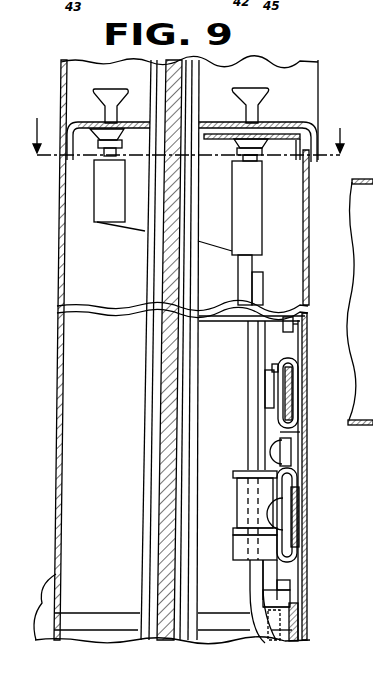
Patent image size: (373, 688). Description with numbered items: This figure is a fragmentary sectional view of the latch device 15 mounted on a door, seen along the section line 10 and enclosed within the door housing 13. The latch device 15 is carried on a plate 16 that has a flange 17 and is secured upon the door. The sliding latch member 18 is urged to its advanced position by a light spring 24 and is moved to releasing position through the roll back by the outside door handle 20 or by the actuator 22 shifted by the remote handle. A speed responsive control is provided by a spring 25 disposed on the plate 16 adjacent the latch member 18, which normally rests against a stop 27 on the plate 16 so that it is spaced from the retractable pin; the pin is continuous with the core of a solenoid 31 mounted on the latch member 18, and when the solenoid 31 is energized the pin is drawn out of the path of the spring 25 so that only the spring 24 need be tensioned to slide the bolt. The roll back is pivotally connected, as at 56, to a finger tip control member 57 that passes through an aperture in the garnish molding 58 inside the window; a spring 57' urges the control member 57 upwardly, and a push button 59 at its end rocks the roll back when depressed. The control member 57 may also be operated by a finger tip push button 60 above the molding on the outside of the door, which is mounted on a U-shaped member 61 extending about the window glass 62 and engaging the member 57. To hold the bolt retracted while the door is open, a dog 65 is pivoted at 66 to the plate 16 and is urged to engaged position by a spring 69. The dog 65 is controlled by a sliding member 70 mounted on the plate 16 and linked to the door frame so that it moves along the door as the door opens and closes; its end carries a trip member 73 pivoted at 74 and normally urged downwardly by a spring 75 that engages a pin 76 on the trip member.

The section line 10- 10 is at (189, 127).
The housing 13 is at (66, 282).
The latch device 15 is at (296, 613).
The plate 16 is at (298, 352).
The flange 17 is at (218, 331).
The sliding latch member 18 is at (288, 482).
The outside door handle 20 is at (86, 614).
The actuator 22 is at (297, 500).
The spring 24 is at (283, 585).
The spring 25 is at (257, 607).
The stop 27 is at (284, 596).
The solenoid 31 is at (236, 490).
The pivotal connection 56 is at (285, 630).
The finger tip control member 57 is at (240, 440).
The spring 57' is at (311, 319).
The garnish molding 58 is at (228, 136).
The push button 59 is at (247, 97).
The finger tip push button 60 is at (107, 92).
The U-shaped member 61 is at (132, 225).
The window glass 62 is at (165, 276).
The dog 65 is at (291, 432).
The pivot 66 is at (271, 453).
The spring 69 is at (286, 456).
The sliding member 70 is at (289, 402).
The trip member 73 is at (300, 392).
The pivot 74 is at (266, 395).
The spring 75 is at (288, 418).
The pin 76 is at (289, 377).